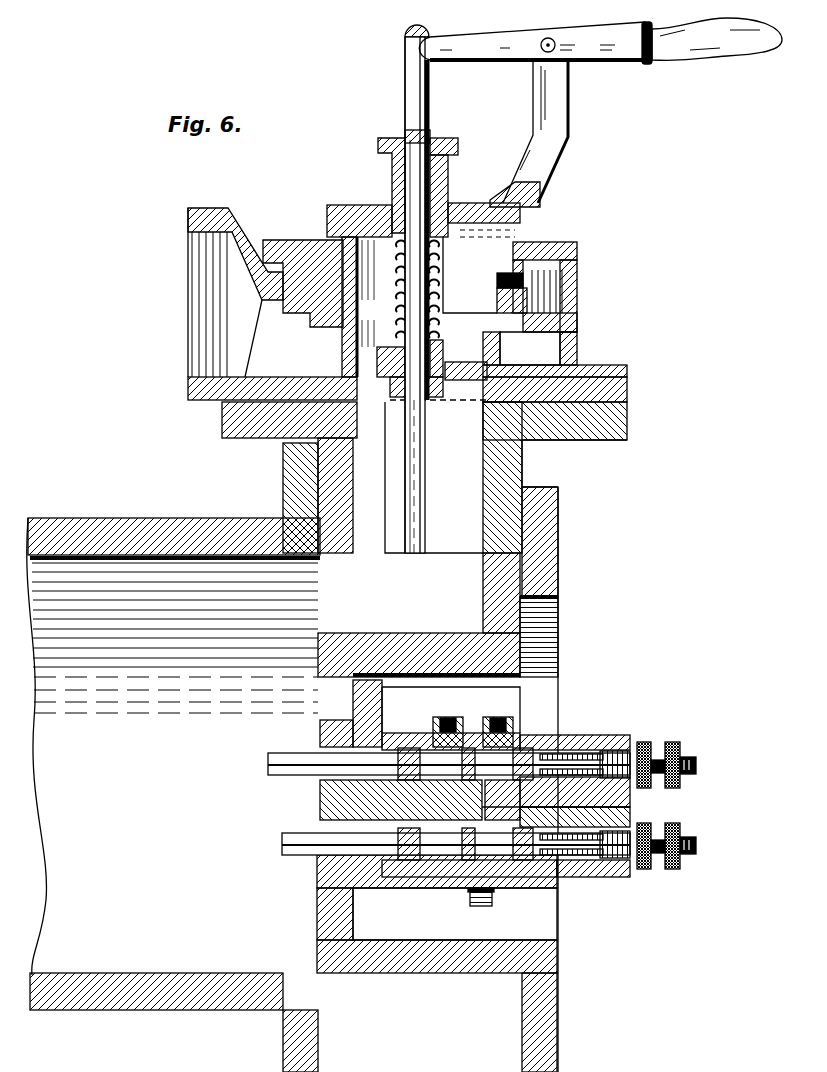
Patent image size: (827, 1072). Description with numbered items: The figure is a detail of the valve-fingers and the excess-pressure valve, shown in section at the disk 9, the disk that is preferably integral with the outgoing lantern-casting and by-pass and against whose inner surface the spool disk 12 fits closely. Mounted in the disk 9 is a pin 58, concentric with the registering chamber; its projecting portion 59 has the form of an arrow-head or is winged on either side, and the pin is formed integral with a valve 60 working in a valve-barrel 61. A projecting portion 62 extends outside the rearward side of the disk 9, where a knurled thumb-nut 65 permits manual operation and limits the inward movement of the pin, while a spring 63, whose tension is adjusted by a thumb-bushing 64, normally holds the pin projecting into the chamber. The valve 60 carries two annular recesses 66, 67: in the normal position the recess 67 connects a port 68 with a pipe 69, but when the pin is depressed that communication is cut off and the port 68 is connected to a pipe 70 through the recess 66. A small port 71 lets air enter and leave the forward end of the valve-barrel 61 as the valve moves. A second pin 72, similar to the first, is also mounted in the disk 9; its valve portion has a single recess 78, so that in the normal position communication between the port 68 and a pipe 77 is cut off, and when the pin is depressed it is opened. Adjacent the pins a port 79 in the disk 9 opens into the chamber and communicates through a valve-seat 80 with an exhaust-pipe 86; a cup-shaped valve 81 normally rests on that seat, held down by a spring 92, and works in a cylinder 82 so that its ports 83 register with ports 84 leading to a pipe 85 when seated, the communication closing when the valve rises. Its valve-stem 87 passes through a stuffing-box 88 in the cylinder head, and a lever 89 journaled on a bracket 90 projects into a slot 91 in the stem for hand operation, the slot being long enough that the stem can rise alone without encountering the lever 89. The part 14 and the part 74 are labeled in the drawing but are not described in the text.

The disk 9 is at (520, 462).
The disk 12 is at (283, 478).
The tank 14 is at (173, 795).
The pin 58 is at (322, 757).
The projecting portion 59 is at (268, 765).
The valve 60 is at (540, 740).
The valve-barrel 61 is at (525, 740).
The projecting portion 62 is at (696, 765).
The spring 63 is at (615, 740).
The thumb-bushing 64 is at (650, 748).
The knurled thumb-nut 65 is at (676, 785).
The annular recess 66 is at (408, 748).
The annular recess 67 is at (470, 715).
The port 68 is at (630, 807).
The pipe 69 is at (500, 730).
The pipe 70 is at (436, 730).
The small port 71 is at (388, 733).
The second pin 72 is at (323, 862).
The housing 74 is at (565, 893).
The pipe 77 is at (485, 906).
The recess 78 is at (460, 890).
The port 79 is at (434, 477).
The valve-seat 80 is at (627, 377).
The valve 81 is at (468, 380).
The cylinder 82 is at (476, 200).
The ports 83 is at (520, 282).
The ports 84 is at (538, 285).
The pipe 85 is at (560, 282).
The exhaust-pipe 86 is at (190, 290).
The valve-stem 87 is at (412, 173).
The stuffing-box 88 is at (400, 138).
The lever 89 is at (493, 45).
The bracket 90 is at (560, 117).
The slot 91 is at (412, 72).
The spring 92 is at (392, 270).